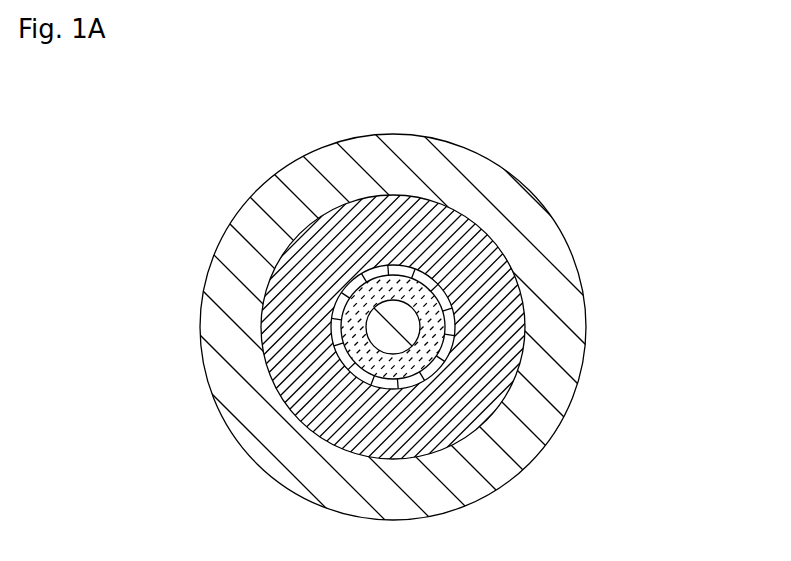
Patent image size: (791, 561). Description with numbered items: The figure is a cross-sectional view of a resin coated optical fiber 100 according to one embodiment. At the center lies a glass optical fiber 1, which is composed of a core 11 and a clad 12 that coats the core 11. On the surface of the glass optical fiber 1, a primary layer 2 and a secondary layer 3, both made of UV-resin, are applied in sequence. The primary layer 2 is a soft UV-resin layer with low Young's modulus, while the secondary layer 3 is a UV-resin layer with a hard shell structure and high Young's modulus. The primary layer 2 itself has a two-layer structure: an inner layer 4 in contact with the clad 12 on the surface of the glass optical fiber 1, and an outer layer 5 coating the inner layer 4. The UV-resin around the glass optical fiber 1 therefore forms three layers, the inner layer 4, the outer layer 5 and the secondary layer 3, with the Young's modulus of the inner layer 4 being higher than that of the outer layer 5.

The resin coated optical fiber 100 is at (542, 144).
The glass optical fiber 1 is at (663, 202).
The core 11 is at (405, 307).
The clad 12 is at (425, 318).
The primary layer 2 is at (663, 293).
The inner layer 4 is at (450, 327).
The outer layer 5 is at (477, 363).
The secondary layer 3 is at (545, 388).